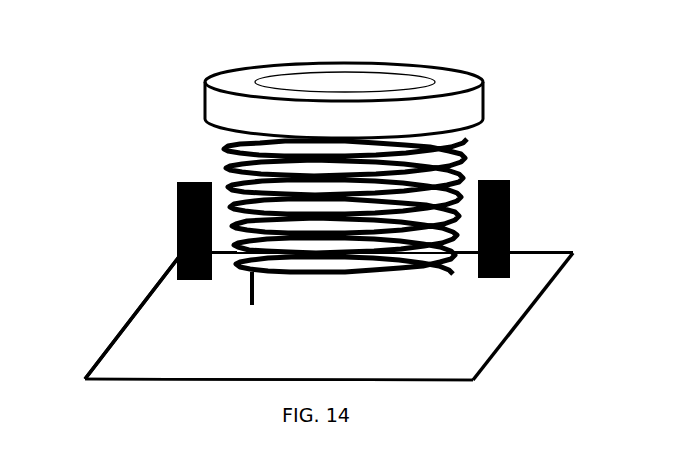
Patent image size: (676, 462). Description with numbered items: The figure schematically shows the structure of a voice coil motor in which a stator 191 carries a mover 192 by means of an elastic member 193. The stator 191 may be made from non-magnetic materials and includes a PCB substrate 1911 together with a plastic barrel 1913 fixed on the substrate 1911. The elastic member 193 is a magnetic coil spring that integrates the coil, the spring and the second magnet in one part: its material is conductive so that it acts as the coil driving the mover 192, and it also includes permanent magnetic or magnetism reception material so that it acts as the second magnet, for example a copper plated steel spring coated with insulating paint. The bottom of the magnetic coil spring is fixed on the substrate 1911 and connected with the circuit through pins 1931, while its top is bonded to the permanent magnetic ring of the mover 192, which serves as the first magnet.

The stator 191 is at (512, 252).
The substrate 1911 is at (132, 358).
The plastic barrel 1913 is at (512, 190).
The mover 192 is at (245, 82).
The elastic member 193 is at (465, 155).
The pins 1931 is at (248, 302).